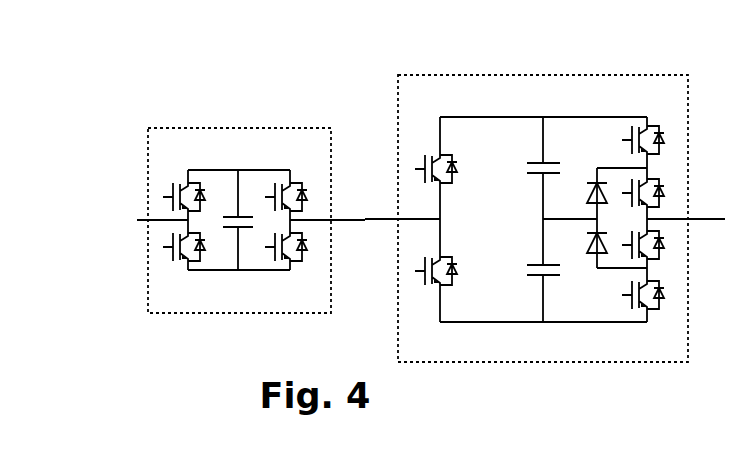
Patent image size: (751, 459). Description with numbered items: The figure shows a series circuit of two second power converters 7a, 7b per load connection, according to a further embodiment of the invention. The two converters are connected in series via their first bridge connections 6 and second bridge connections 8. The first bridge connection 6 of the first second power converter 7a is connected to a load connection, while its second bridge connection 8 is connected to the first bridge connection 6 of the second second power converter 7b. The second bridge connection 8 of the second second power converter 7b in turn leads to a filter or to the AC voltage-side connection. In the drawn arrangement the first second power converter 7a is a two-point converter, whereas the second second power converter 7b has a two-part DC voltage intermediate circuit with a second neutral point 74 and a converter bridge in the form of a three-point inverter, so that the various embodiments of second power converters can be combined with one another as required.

The first bridge connection 6 is at (137, 220).
The second bridge connection 8 is at (347, 219).
The first second power converter 7a is at (241, 128).
The second second power converter 7b is at (545, 72).
The second neutral point 74 is at (540, 221).